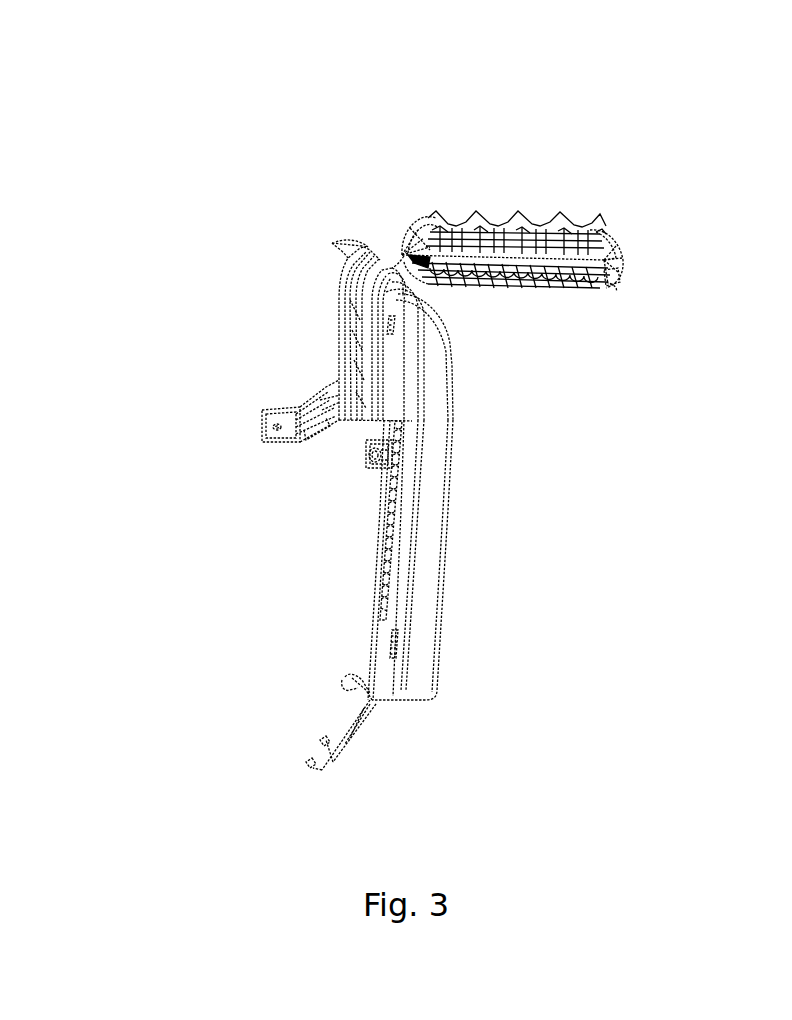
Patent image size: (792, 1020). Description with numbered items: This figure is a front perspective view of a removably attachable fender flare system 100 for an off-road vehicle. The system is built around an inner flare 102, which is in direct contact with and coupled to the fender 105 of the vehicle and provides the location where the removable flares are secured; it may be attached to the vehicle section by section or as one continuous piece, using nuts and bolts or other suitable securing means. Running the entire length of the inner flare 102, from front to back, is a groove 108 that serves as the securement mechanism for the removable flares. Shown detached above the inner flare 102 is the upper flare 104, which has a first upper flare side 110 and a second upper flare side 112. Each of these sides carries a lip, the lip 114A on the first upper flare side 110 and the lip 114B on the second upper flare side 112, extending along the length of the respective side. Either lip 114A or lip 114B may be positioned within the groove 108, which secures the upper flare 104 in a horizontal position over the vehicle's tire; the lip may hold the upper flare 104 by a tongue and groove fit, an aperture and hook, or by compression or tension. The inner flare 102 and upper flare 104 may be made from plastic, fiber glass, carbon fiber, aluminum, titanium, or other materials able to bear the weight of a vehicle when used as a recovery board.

The removably attachable fender flare system 100 is at (167, 84).
The inner flare 102 is at (425, 570).
The upper flare 104 is at (590, 232).
The fender 105 is at (338, 378).
The groove 108 is at (393, 335).
The first upper flare side 110 is at (407, 230).
The second upper flare side 112 is at (610, 258).
The lip 114A is at (412, 259).
The lip 114B is at (617, 278).